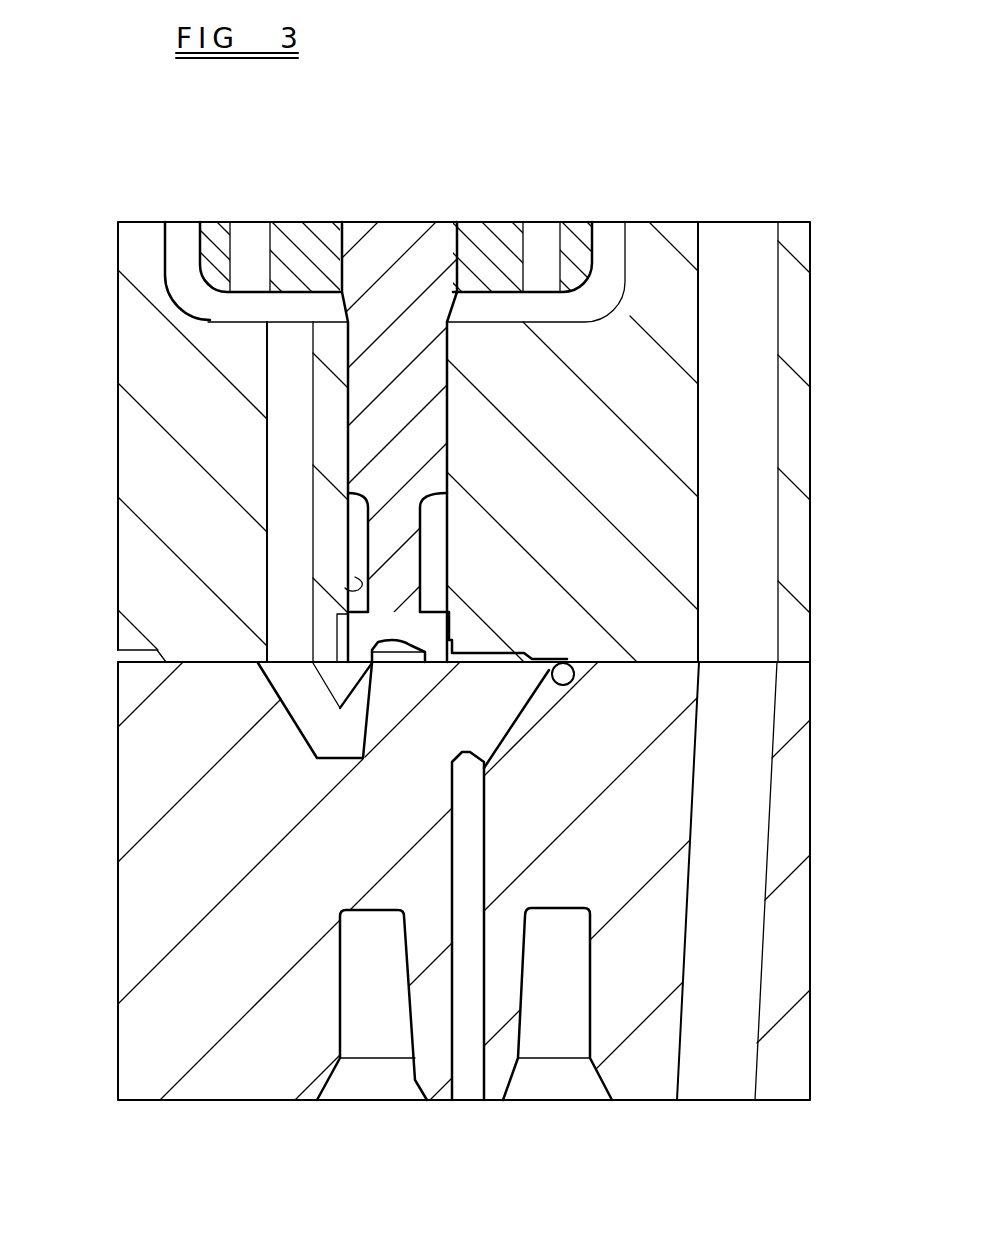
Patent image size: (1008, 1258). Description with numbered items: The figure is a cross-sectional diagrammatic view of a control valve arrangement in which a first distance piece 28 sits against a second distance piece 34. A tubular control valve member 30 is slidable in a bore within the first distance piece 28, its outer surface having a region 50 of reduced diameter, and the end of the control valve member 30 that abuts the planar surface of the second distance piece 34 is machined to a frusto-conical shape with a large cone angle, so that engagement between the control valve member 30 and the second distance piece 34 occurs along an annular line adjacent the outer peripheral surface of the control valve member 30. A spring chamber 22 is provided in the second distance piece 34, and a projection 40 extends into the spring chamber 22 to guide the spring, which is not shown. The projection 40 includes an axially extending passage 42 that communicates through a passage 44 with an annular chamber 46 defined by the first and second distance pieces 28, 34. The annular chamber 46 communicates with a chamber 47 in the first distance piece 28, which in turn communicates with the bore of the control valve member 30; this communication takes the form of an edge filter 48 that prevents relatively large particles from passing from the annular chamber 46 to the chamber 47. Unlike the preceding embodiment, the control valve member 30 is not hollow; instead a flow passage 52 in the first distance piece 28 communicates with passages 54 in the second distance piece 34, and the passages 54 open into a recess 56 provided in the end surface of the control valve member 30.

The spring chamber 22 is at (577, 1082).
The first distance piece 28 is at (800, 458).
The control valve member 30 is at (363, 382).
The second distance piece 34 is at (792, 886).
The projection 40 is at (500, 1042).
The axially extending passage 42 is at (473, 817).
The passage 44 is at (523, 713).
The annular chamber 46 is at (587, 672).
The chamber 47 is at (355, 577).
The edge filter 48 is at (562, 646).
The region of reduced diameter 50 is at (368, 543).
The flow passage 52 is at (275, 465).
The passages 54 is at (375, 695).
The recess 56 is at (387, 643).